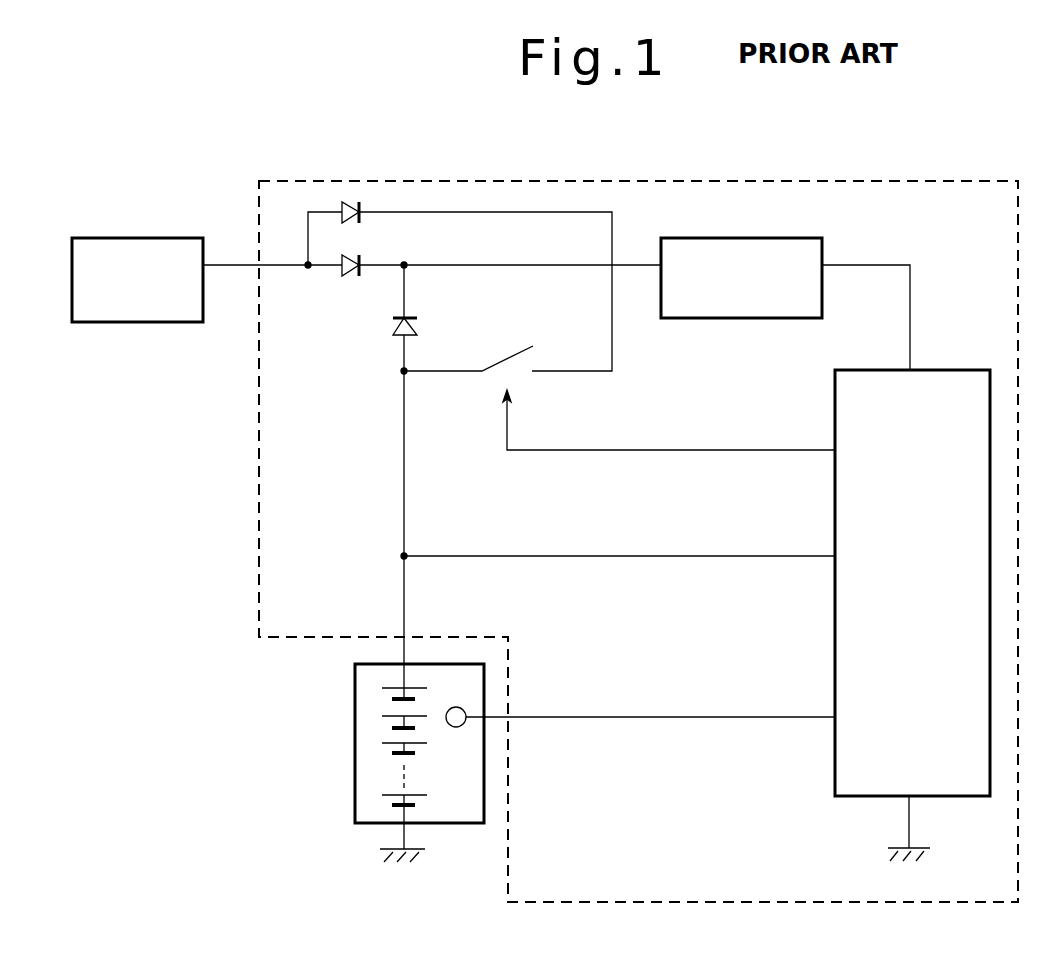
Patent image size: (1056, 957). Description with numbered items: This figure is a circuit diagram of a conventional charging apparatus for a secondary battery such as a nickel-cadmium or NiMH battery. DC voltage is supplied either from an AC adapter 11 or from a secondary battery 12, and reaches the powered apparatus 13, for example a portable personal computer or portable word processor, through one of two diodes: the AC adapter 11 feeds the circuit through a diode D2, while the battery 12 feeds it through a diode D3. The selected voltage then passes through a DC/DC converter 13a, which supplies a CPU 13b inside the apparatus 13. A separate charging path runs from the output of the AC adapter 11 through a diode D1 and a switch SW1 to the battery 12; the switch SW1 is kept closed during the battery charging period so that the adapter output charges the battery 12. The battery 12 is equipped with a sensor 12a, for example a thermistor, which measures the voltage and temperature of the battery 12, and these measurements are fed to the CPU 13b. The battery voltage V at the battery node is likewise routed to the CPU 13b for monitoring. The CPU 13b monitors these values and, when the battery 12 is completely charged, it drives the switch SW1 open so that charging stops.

The AC adapter 11 is at (95, 237).
The secondary battery 12 is at (355, 806).
The sensor 12a is at (464, 725).
The apparatus 13 is at (418, 181).
The DC/DC converter 13a is at (722, 320).
The CPU 13b is at (835, 413).
The diode D1 is at (360, 221).
The diode D2 is at (350, 277).
The diode D3 is at (396, 336).
The switch SW1 is at (518, 380).
The battery voltage V is at (619, 543).